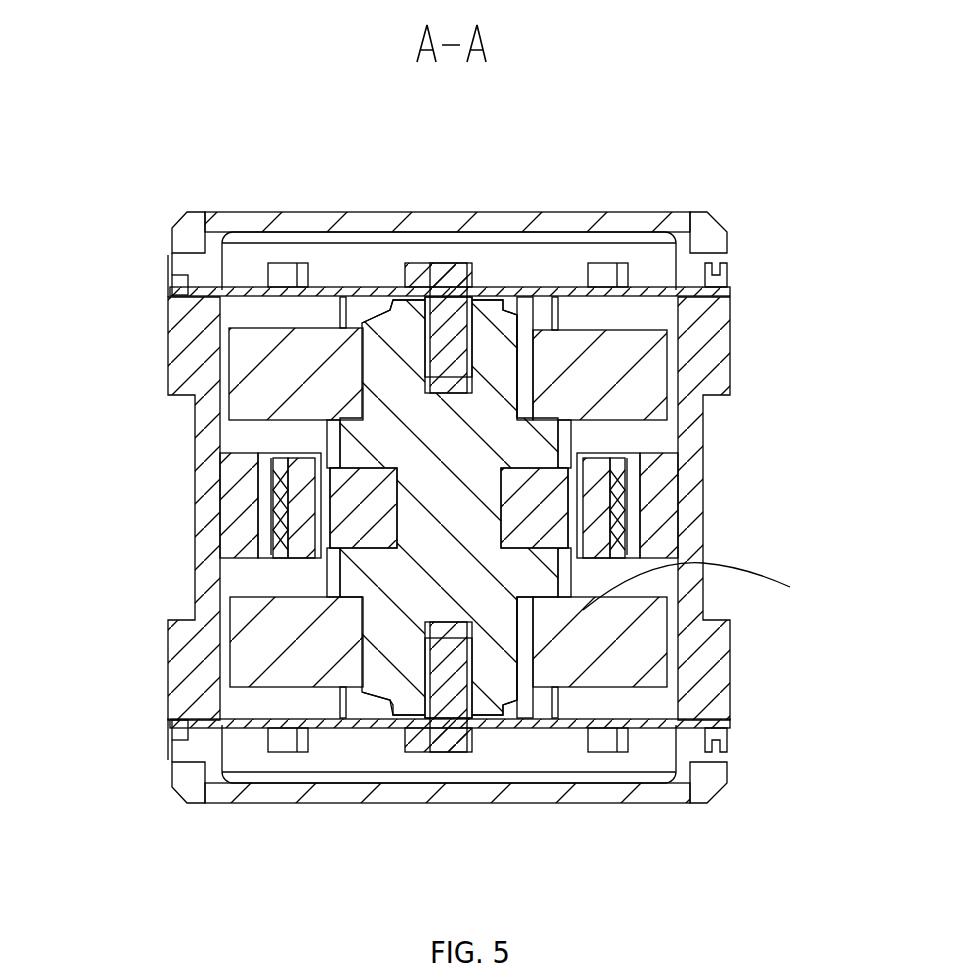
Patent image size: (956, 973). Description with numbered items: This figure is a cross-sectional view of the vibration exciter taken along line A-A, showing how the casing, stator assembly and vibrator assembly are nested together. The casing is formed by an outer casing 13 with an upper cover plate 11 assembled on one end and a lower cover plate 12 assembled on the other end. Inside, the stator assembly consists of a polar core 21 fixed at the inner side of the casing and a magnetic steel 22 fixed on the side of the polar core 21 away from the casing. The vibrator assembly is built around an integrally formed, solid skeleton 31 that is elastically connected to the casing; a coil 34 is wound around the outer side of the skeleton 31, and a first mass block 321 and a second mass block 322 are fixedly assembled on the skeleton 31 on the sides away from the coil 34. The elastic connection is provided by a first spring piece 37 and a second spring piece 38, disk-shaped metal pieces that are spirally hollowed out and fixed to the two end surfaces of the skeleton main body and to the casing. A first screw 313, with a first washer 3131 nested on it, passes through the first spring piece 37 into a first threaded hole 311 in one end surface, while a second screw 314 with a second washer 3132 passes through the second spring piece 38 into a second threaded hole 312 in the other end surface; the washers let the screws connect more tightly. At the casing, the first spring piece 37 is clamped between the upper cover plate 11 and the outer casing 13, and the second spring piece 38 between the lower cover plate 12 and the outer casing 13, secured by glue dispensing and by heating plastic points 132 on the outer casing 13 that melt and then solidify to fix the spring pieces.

The upper cover plate 11 is at (705, 253).
The lower cover plate 12 is at (705, 778).
The outer casing 13 is at (706, 372).
The plastic point 132 is at (598, 285).
The first spring piece 37 is at (716, 278).
The second spring piece 38 is at (225, 722).
The polar core 21 is at (278, 533).
The magnetic steel 22 is at (593, 550).
The skeleton 31 is at (357, 487).
The first threaded hole 311 is at (453, 387).
The second threaded hole 312 is at (425, 632).
The first screw 313 is at (438, 294).
The first washer 3131 is at (487, 290).
The second screw 314 is at (438, 722).
The second washer 3132 is at (487, 725).
The first mass block 321 is at (250, 357).
The second mass block 322 is at (633, 670).
The coil 34 is at (553, 523).